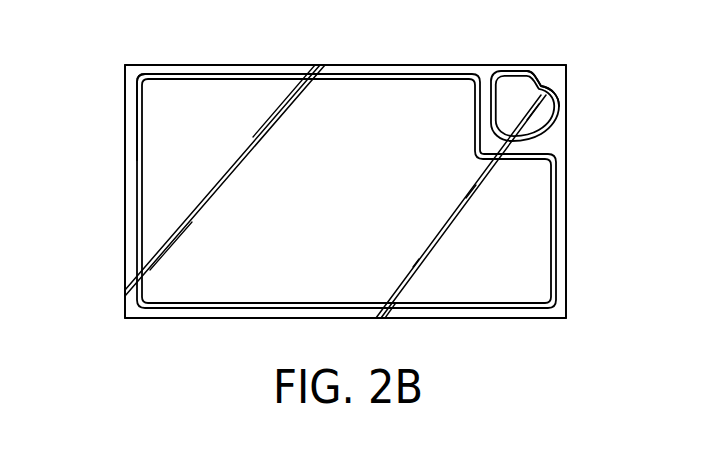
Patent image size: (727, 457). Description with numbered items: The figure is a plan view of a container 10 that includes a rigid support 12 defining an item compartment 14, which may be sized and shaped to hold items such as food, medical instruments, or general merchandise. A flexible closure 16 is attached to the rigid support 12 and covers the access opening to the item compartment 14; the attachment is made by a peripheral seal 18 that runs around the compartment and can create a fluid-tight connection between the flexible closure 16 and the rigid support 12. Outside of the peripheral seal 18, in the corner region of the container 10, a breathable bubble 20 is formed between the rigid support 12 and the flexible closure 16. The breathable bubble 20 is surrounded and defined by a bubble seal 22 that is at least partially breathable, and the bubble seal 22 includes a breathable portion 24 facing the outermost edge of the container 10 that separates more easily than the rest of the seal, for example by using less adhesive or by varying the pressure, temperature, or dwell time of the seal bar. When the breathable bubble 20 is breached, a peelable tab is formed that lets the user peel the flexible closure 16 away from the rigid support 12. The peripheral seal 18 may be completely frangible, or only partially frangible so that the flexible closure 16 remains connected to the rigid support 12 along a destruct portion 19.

The container 10 is at (97, 46).
The rigid support 12 is at (552, 270).
The item compartment 14 is at (345, 116).
The flexible closure 16 is at (152, 231).
The peripheral seal 18 is at (486, 68).
The destruct portion 19 is at (134, 146).
The breathable bubble 20 is at (546, 110).
The bubble seal 22 is at (546, 132).
The breathable portion 24 is at (538, 81).